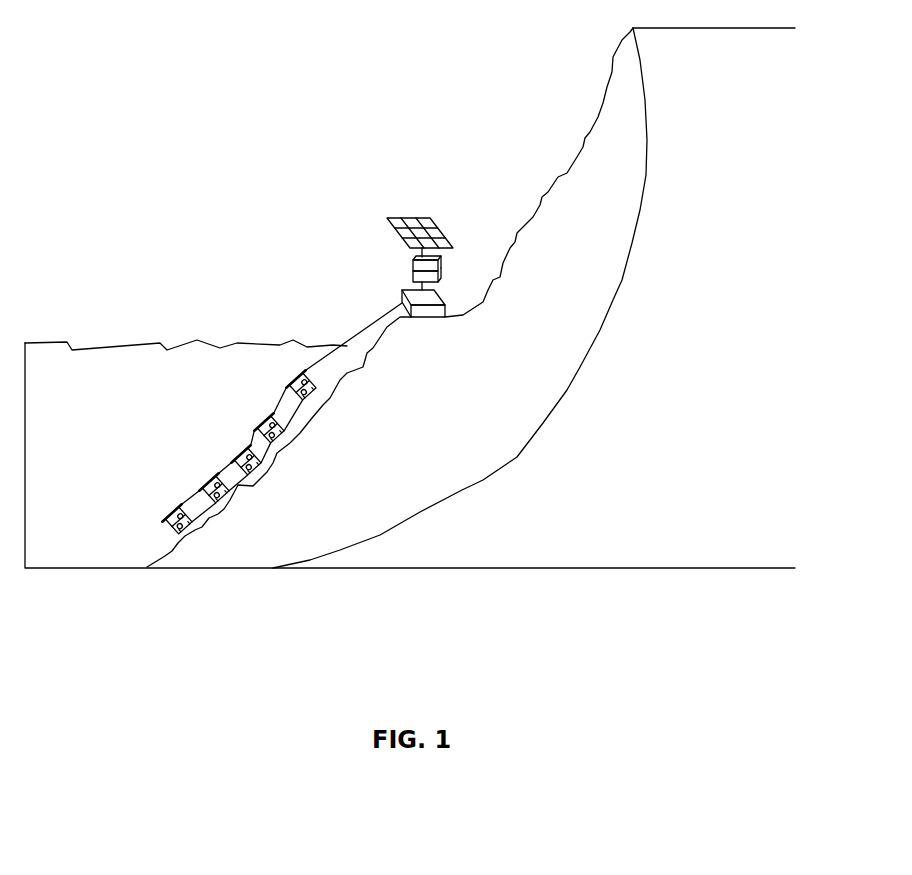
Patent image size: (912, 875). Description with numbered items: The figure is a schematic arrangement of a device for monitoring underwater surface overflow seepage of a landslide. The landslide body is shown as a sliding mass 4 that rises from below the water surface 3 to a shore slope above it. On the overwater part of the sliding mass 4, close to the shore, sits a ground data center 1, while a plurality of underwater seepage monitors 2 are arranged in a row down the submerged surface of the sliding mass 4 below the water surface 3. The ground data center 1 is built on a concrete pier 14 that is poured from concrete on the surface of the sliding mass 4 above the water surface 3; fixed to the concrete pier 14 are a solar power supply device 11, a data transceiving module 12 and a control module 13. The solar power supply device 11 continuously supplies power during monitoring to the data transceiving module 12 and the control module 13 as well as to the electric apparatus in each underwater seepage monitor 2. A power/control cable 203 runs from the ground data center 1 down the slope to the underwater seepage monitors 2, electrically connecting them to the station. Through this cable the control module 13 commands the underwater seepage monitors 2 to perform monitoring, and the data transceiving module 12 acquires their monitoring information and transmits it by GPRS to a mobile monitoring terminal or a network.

The ground data center 1 is at (283, 197).
The solar power supply device 11 is at (388, 216).
The data transceiving module 12 is at (412, 264).
The control module 13 is at (412, 274).
The concrete pier 14 is at (401, 292).
The underwater seepage monitor 2 is at (243, 455).
The power/control cable 203 is at (322, 358).
The water surface 3 is at (197, 340).
The sliding mass 4 is at (615, 160).